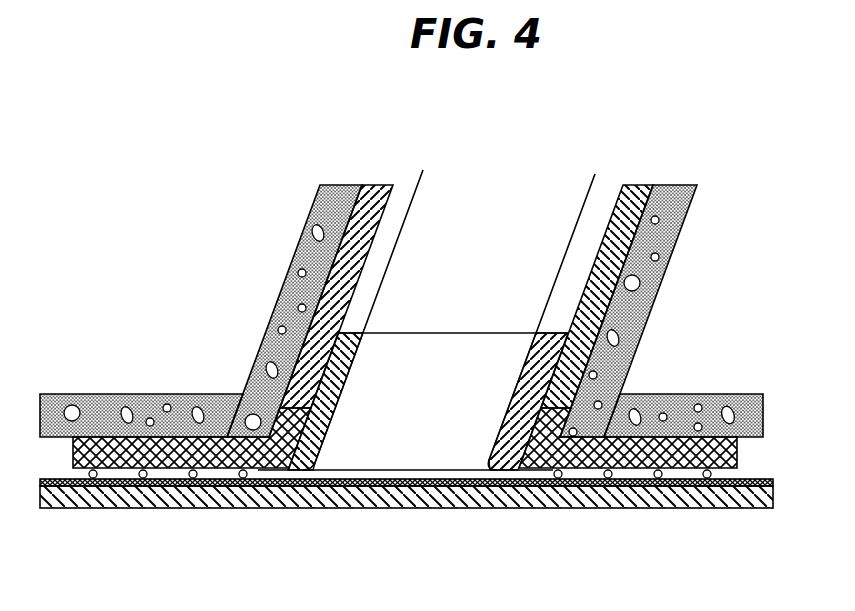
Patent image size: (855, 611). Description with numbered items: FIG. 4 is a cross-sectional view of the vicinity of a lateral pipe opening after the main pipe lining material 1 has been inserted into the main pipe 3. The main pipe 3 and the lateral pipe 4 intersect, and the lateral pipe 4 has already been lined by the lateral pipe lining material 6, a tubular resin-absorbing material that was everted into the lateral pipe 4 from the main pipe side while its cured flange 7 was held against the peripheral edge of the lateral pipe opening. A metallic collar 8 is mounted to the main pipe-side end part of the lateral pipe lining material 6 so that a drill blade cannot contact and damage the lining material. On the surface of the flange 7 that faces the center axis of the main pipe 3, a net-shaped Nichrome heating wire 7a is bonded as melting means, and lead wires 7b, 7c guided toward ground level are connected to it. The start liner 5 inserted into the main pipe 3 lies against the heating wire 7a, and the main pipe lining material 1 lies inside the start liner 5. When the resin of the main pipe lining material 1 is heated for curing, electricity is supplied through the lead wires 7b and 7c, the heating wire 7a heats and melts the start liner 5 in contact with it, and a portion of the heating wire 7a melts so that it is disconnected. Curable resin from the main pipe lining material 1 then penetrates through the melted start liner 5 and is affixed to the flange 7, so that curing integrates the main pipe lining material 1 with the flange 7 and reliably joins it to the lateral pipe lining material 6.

The main pipe lining material 1 is at (699, 497).
The main pipe 3 is at (722, 395).
The lateral pipe 4 is at (307, 218).
The start liner 5 is at (776, 482).
The lateral pipe lining material 6 is at (617, 254).
The flange 7 is at (114, 437).
The heating wire 7a is at (203, 463).
The lead wire 7b is at (414, 199).
The lead wire 7c is at (558, 270).
The metallic collar 8 is at (327, 370).